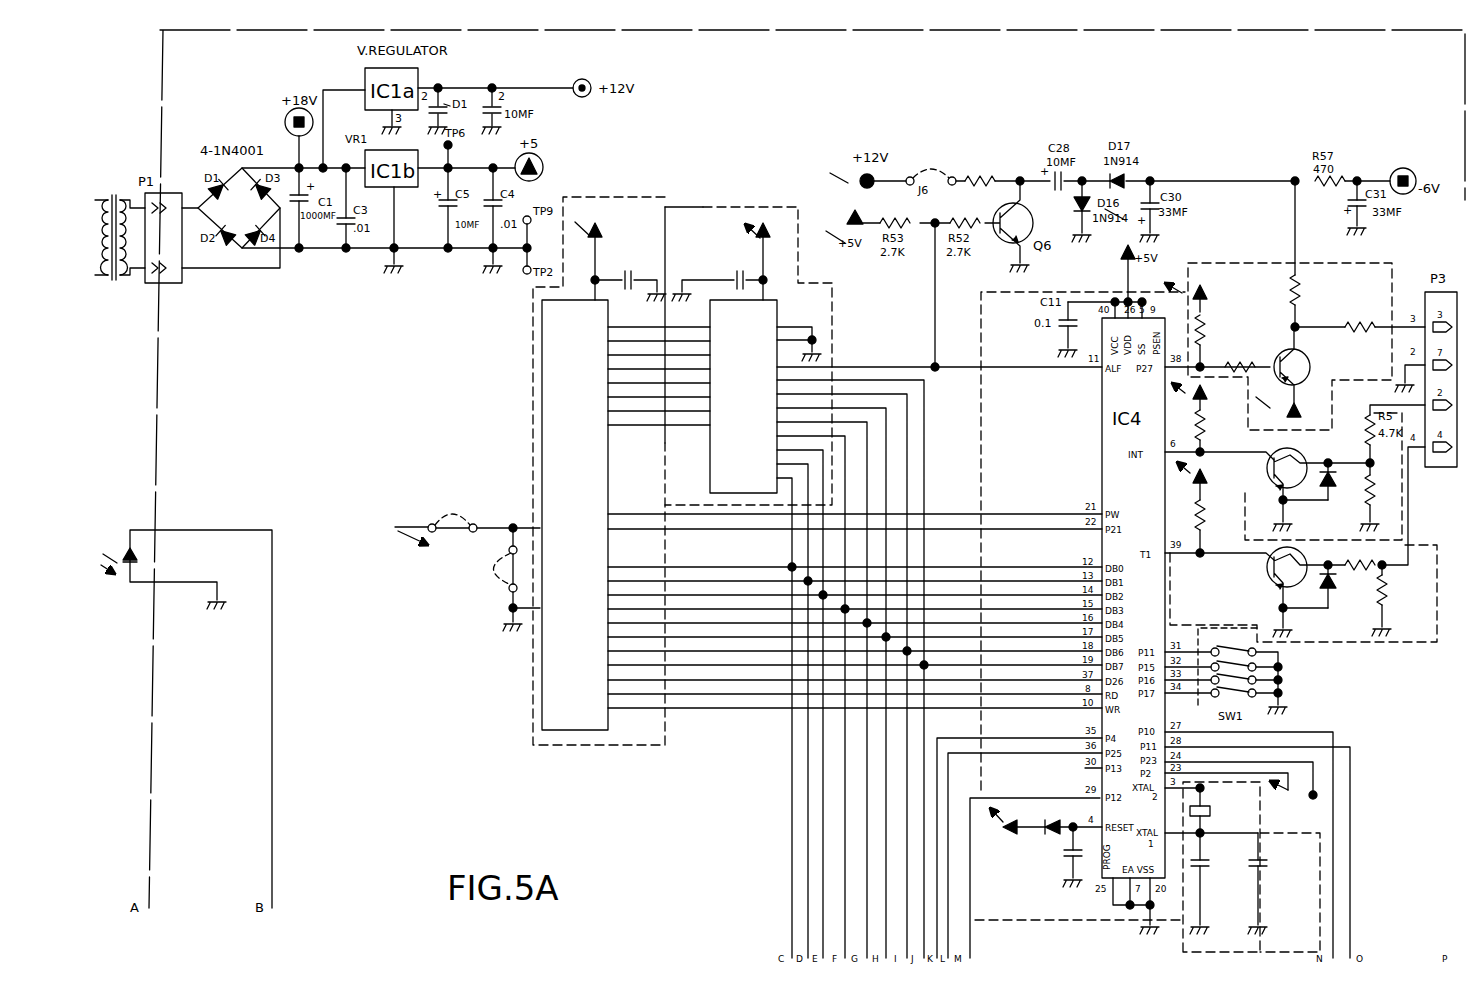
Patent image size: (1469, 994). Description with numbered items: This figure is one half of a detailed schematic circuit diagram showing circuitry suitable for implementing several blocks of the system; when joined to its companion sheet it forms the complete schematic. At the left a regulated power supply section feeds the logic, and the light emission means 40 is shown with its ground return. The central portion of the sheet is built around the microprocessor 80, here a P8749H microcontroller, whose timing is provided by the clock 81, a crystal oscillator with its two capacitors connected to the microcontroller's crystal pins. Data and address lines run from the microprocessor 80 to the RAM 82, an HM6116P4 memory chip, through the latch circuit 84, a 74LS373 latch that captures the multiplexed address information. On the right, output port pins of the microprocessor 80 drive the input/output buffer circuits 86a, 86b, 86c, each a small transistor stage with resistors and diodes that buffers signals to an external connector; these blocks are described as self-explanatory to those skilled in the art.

The light emission means 40 is at (177, 719).
The microprocessor 80 is at (1037, 922).
The clock 81 is at (1180, 940).
The RAM 82 is at (555, 500).
The latch circuit 84 is at (692, 207).
The input/output buffer circuit 86a is at (1370, 263).
The input/output buffer circuit 86b is at (1402, 530).
The input/output buffer circuit 86c is at (1414, 643).